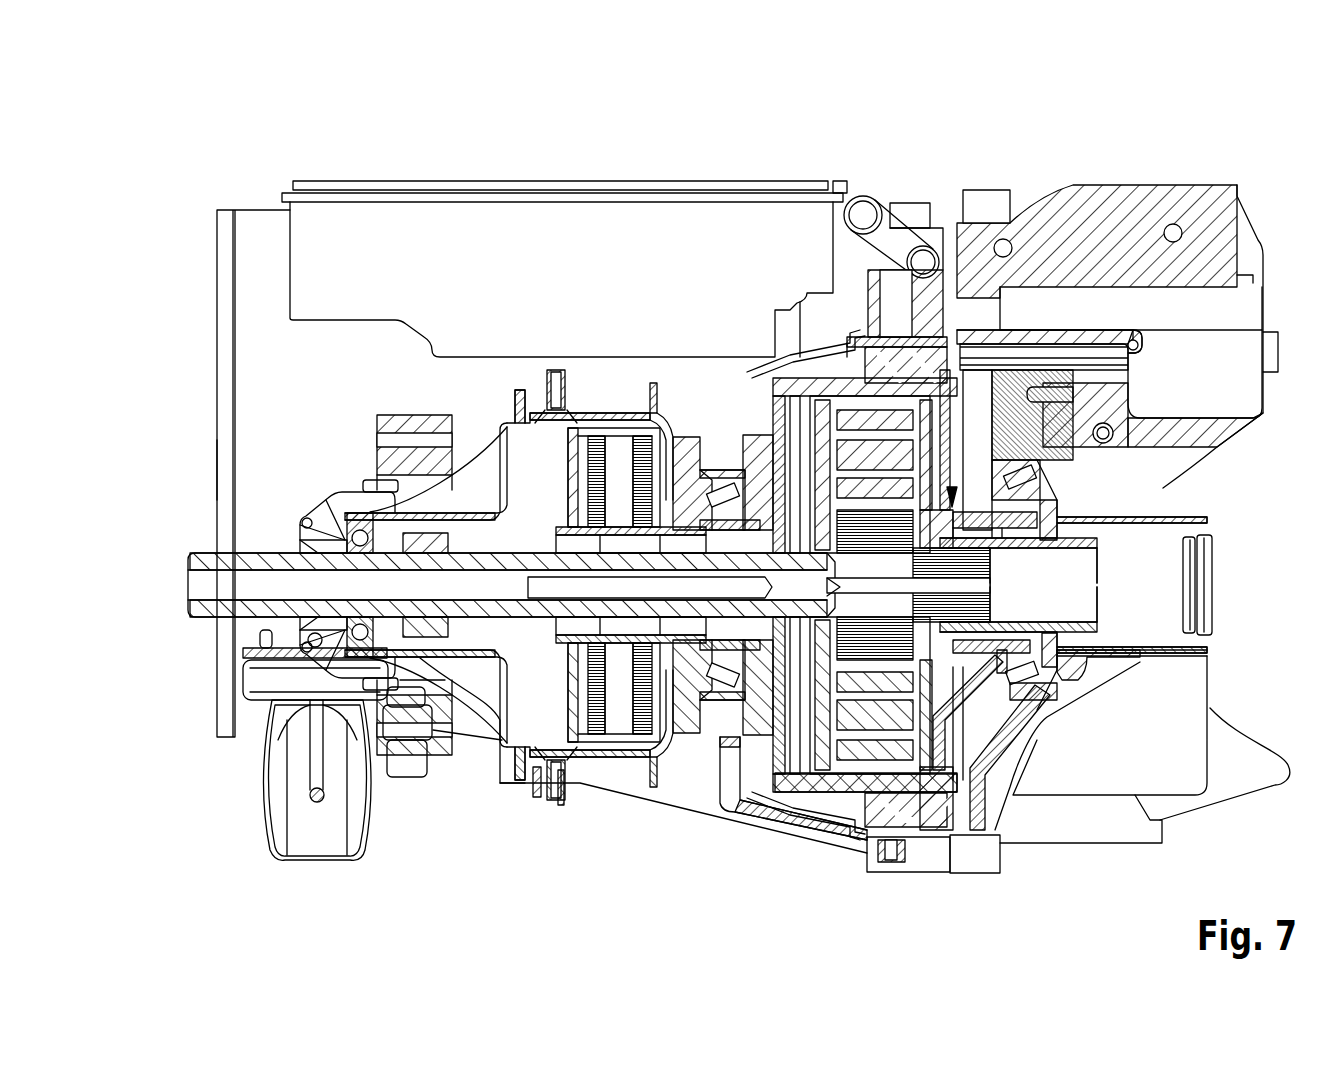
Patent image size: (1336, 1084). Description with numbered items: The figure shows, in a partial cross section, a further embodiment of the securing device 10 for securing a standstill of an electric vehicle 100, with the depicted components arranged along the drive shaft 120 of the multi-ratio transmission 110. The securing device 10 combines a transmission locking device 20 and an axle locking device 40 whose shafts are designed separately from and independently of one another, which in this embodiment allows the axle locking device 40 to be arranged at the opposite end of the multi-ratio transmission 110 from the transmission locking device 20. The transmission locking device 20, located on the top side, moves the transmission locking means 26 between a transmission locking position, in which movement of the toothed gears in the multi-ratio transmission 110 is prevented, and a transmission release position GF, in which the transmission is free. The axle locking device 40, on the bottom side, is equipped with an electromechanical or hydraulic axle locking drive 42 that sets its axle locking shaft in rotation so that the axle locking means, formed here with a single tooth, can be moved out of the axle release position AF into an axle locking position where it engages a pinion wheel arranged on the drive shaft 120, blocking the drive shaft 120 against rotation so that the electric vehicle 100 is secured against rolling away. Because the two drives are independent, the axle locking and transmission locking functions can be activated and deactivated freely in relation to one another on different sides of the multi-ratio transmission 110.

The electric vehicle 100 is at (410, 124).
The transmission locking device 20 is at (900, 187).
The multi-ratio transmission 110 is at (1073, 403).
The transmission locking means 26 is at (967, 427).
The transmission release position GF is at (960, 477).
The drive shaft 120 is at (200, 607).
The securing device 10 is at (604, 860).
The axle locking device 40 is at (255, 859).
The axle locking drive 42 is at (262, 812).
The axle release position AF is at (265, 472).